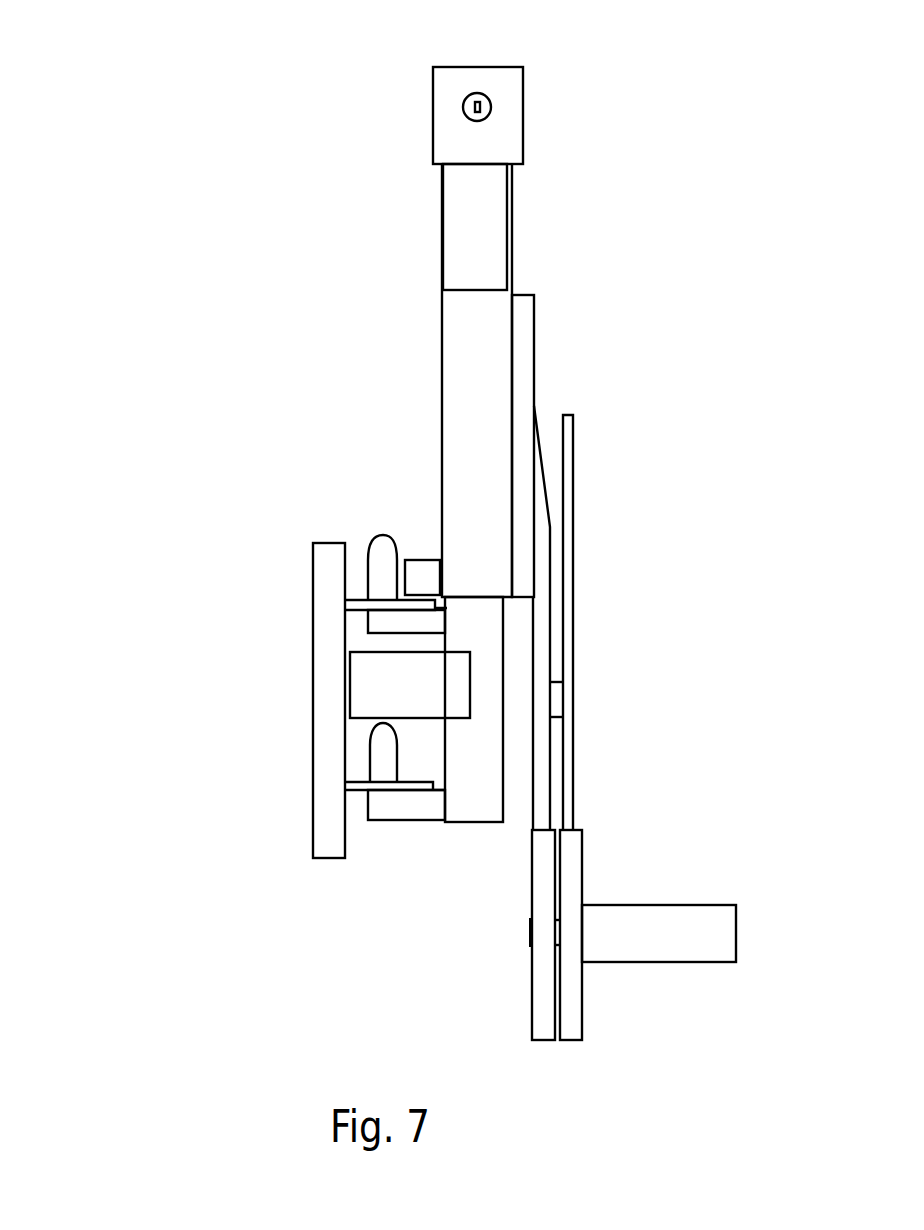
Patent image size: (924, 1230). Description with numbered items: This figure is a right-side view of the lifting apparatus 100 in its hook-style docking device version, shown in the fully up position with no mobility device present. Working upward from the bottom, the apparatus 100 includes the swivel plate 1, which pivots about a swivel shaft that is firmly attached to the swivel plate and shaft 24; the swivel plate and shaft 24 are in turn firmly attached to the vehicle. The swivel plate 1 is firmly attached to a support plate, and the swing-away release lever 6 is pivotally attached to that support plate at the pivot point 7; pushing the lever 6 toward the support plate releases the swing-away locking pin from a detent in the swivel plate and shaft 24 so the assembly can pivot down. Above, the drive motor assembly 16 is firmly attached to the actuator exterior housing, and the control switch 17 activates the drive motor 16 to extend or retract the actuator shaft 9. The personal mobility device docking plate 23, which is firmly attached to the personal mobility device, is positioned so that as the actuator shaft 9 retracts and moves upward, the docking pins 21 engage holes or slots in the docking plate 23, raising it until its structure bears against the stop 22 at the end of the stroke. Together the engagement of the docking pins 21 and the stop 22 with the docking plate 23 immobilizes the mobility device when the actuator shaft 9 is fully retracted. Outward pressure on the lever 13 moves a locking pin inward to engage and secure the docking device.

The lifting apparatus 100 is at (226, 63).
The swivel plate 1 is at (542, 1018).
The swing-away release lever 6 is at (568, 460).
The pivot point 7 is at (558, 698).
The actuator shaft 9 is at (483, 772).
The lever 13 is at (487, 410).
The drive motor assembly 16 is at (475, 262).
The control switch 17 is at (482, 113).
The docking pins 21 is at (385, 560).
The stop 22 is at (418, 580).
The personal mobility device docking plate 23 is at (370, 603).
The swivel plate and shaft 24 is at (577, 869).